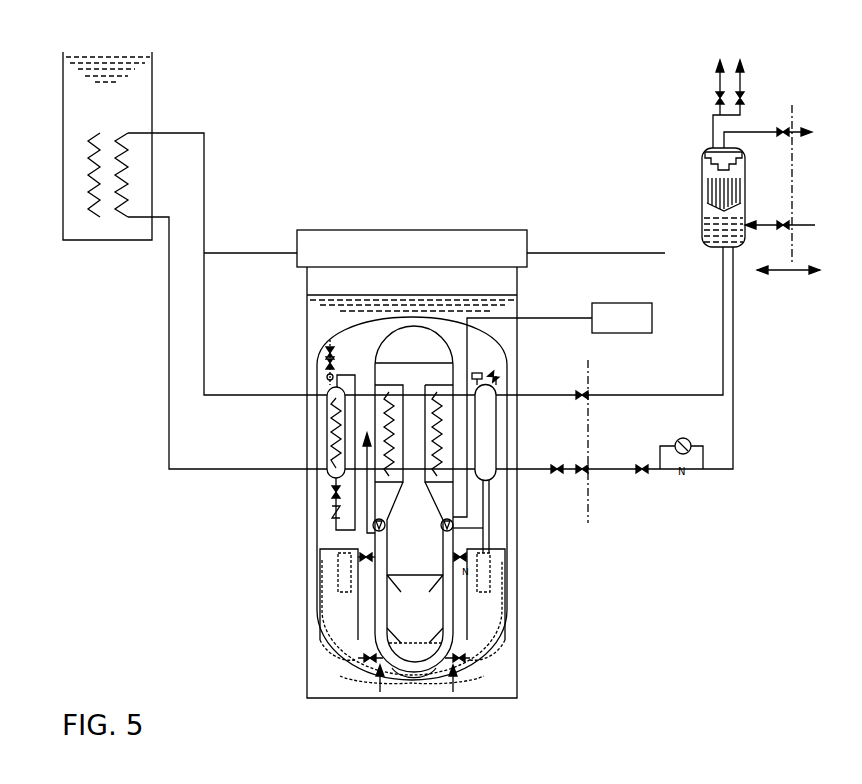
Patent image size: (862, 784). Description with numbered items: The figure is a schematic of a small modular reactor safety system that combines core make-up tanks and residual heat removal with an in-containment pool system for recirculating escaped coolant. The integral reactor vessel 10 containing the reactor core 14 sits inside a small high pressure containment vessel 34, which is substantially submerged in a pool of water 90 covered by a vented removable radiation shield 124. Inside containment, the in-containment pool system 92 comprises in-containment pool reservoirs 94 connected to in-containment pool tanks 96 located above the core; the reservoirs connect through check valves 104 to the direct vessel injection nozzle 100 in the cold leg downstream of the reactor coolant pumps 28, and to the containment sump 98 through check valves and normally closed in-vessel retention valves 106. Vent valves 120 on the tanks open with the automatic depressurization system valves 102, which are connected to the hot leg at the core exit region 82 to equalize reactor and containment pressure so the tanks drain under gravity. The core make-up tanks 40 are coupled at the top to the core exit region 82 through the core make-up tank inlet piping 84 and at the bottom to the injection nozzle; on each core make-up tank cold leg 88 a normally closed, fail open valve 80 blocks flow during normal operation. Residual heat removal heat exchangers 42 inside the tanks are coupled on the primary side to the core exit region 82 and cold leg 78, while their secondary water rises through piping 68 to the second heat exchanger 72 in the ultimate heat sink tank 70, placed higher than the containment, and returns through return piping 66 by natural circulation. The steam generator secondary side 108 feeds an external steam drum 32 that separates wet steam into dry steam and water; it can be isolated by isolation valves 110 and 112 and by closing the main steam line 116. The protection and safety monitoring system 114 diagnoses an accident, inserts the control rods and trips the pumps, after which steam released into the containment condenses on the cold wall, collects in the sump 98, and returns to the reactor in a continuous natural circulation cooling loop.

The integral reactor vessel 10 is at (455, 600).
The reactor core 14 is at (425, 618).
The reactor coolant pumps 28 is at (455, 530).
The steam drum 32 is at (692, 197).
The containment vessel 34 is at (505, 345).
The core make-up tanks 40 is at (327, 430).
The residual heat removal heat exchangers 42 is at (330, 456).
The return piping 66 is at (169, 412).
The piping 68 is at (205, 308).
The ultimate heat sink tank 70 is at (128, 107).
The second heat exchanger 72 is at (122, 186).
The cold leg 78 is at (355, 660).
The fail open valve 80 is at (362, 540).
The core exit region 82 is at (425, 556).
The core make-up tank inlet piping 84 is at (333, 341).
The core make-up tank cold leg 88 is at (340, 516).
The pool of water 90 is at (338, 331).
The in-containment pool system 92 is at (382, 694).
The in-containment pool reservoirs 94 is at (345, 640).
The in-containment pool tanks 96 is at (491, 478).
The containment sump 98 is at (420, 676).
The direct vessel injection nozzle 100 is at (320, 590).
The automatic depressurization system valves 102 is at (360, 501).
The check valves 104 is at (330, 601).
The in-vessel retention valves 106 is at (372, 662).
The steam generator secondary side 108 is at (644, 436).
The isolation valve 110 is at (553, 398).
The isolation valve 112 is at (560, 475).
The protection and safety monitoring system 114 is at (641, 328).
The main steam line 116 is at (758, 132).
The vent valves 120 is at (500, 376).
The vented removable radiation shield 124 is at (412, 240).